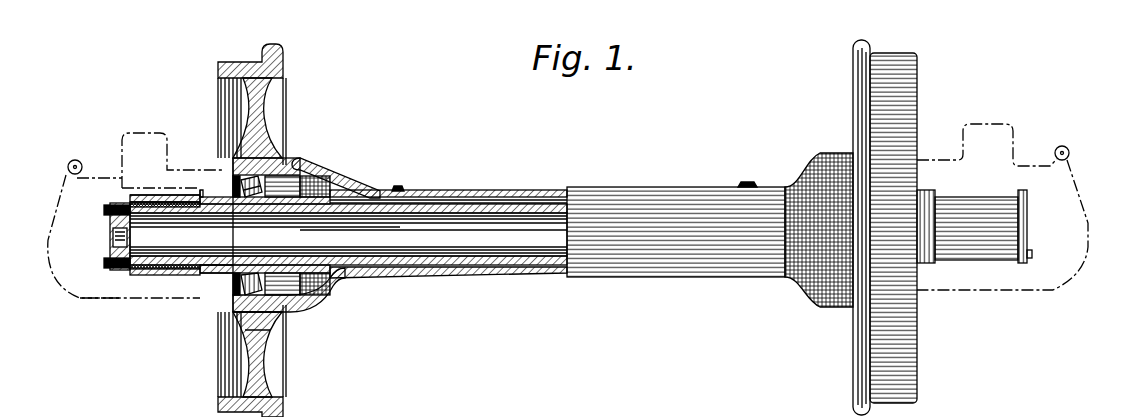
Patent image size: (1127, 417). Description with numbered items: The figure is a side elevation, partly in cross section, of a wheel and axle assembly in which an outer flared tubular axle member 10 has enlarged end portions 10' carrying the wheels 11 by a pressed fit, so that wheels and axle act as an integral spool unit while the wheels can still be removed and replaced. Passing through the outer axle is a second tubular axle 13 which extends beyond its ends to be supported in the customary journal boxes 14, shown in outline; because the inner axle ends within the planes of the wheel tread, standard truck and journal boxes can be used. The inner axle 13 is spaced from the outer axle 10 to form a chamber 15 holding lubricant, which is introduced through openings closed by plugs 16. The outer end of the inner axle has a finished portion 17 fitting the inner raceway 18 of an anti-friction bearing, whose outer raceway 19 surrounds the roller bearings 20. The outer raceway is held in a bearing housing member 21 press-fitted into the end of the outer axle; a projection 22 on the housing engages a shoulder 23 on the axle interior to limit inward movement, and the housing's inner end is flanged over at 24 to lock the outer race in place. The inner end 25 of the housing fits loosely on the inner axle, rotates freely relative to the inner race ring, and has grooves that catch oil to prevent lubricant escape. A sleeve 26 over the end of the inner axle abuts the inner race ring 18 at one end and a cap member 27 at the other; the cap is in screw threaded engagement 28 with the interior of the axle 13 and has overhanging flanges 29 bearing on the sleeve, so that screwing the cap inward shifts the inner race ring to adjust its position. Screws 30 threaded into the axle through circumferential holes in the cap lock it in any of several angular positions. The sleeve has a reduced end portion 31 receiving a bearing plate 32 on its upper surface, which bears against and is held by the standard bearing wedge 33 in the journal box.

The outer flared tubular axle member 10 is at (383, 214).
The enlarged end portions 10' is at (520, 228).
The wheels 11 is at (284, 66).
The second tubular axle 13 is at (383, 210).
The journal boxes 14 is at (122, 150).
The chamber 15 is at (347, 186).
The plugs 16 is at (395, 186).
The portion 17 is at (262, 158).
The inner raceway 18 is at (235, 165).
The outer raceway 19 is at (297, 178).
The roller bearings 20 is at (270, 212).
The bearing housing member 21 is at (230, 300).
The projection 22 is at (237, 312).
The shoulder 23 is at (272, 325).
The flanged inner end 24 is at (332, 300).
The inner end of the housing member 25 is at (218, 290).
The sleeve 26 is at (185, 278).
The cap member 27 is at (112, 245).
The screw threaded engagement 28 is at (113, 230).
The overhanging flanges 29 is at (105, 204).
The screws 30 is at (104, 211).
The reduced end portion 31 is at (75, 292).
The bearing plate 32 is at (128, 195).
The bearing wedge 33 is at (162, 188).